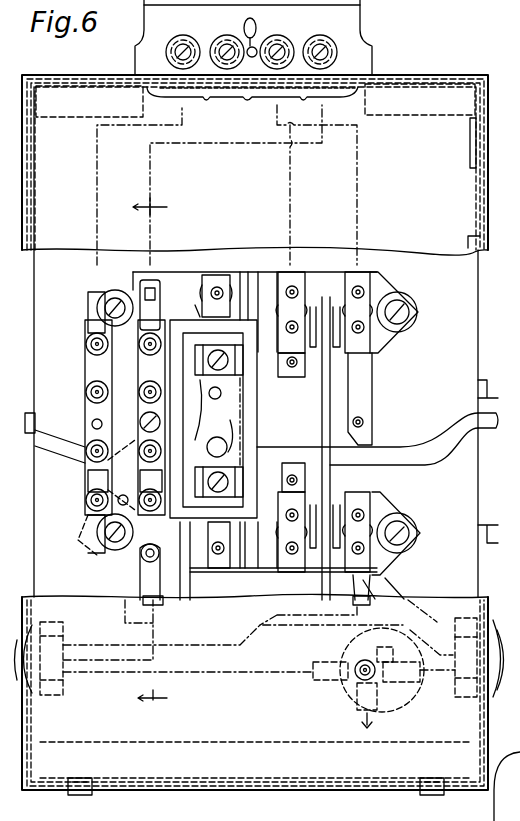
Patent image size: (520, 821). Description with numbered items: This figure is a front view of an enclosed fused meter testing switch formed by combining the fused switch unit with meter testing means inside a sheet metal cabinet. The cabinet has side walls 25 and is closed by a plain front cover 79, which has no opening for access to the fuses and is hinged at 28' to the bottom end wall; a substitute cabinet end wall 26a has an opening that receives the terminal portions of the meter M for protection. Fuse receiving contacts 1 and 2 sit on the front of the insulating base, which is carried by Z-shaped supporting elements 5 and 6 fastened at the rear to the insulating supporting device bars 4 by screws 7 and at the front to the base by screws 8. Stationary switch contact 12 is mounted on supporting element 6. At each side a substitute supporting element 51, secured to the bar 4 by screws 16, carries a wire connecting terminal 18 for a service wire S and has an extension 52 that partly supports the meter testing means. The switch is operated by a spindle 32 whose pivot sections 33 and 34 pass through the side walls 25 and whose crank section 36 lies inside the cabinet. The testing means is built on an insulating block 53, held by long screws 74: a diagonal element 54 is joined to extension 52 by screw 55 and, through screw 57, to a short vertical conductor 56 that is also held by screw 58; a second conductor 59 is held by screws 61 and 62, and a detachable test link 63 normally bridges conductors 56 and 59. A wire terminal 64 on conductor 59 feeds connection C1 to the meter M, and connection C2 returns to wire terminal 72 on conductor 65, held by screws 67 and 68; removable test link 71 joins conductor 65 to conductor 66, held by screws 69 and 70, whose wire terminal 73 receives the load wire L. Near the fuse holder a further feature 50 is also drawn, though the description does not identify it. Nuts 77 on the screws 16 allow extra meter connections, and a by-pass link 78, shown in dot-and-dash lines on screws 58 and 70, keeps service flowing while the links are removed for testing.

The fuse receiving contact 1 is at (244, 475).
The fuse receiving contact 2 is at (228, 378).
The supporting device bar 4 is at (392, 291).
The supporting element 5 is at (288, 463).
The supporting element 6 is at (292, 372).
The screw 7 is at (291, 422).
The screw 8 is at (159, 459).
The stationary switch contact 12 is at (208, 312).
The screw 16 is at (385, 519).
The wire connecting terminal 18 is at (160, 602).
The side wall 25 is at (36, 267).
The cabinet end wall 26a is at (418, 86).
The hinge 28' is at (256, 796).
The spindle 32 is at (383, 448).
The pivot section 33 is at (486, 413).
The pivot section 34 is at (60, 446).
The crank section 36 is at (387, 458).
The opening 50 is at (217, 442).
The substitute supporting element 51 is at (155, 285).
The extension 52 is at (366, 379).
The insulating block 53 is at (98, 537).
The transverse element 54 is at (140, 457).
The screw 55 is at (141, 419).
The short vertical conductor 56 is at (88, 484).
The screw 57 is at (88, 455).
The screw 58 is at (88, 500).
The second conductor 59 is at (90, 370).
The screw 61 is at (88, 342).
The screw 62 is at (88, 392).
The detachable test link 63 is at (92, 420).
The wire terminal 64 is at (90, 300).
The vertical conductor 65 is at (146, 371).
The vertical conductor 66 is at (147, 479).
The screw 67 is at (139, 345).
The screw 68 is at (139, 392).
The screw 69 is at (141, 448).
The screw 70 is at (140, 510).
The removable test link 71 is at (230, 462).
The wire terminal 72 is at (202, 292).
The wire terminal 73 is at (140, 558).
The screw 74 is at (117, 303).
The nut 77 is at (366, 514).
The by-pass link 78 is at (88, 510).
The plain front cover 79 is at (466, 238).
The connection C1 is at (97, 185).
The connection C2 is at (150, 172).
The load wire L is at (218, 628).
The meter M is at (363, 32).
The service wire S is at (92, 648).